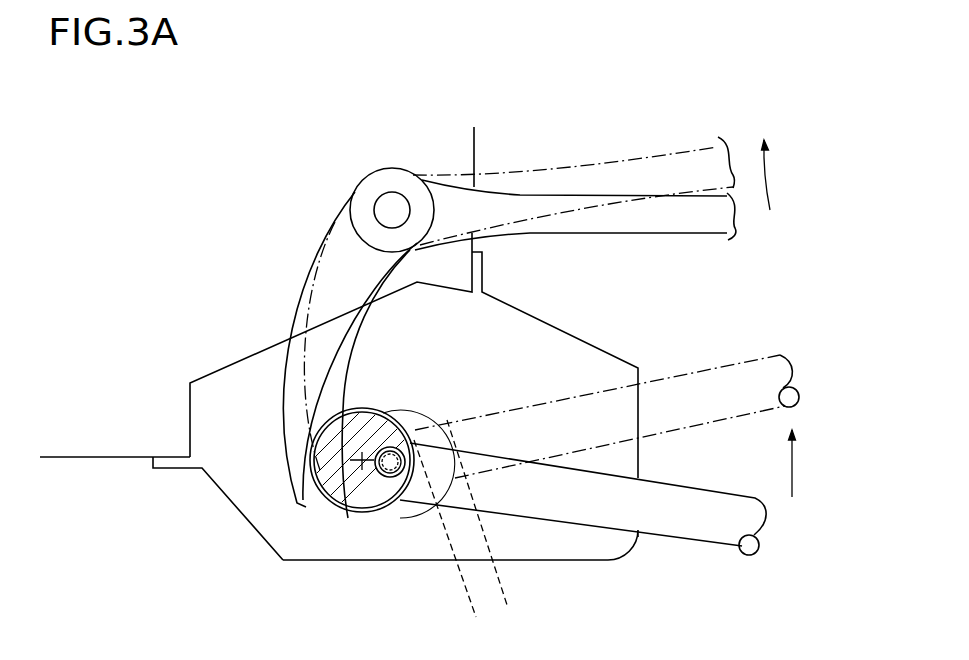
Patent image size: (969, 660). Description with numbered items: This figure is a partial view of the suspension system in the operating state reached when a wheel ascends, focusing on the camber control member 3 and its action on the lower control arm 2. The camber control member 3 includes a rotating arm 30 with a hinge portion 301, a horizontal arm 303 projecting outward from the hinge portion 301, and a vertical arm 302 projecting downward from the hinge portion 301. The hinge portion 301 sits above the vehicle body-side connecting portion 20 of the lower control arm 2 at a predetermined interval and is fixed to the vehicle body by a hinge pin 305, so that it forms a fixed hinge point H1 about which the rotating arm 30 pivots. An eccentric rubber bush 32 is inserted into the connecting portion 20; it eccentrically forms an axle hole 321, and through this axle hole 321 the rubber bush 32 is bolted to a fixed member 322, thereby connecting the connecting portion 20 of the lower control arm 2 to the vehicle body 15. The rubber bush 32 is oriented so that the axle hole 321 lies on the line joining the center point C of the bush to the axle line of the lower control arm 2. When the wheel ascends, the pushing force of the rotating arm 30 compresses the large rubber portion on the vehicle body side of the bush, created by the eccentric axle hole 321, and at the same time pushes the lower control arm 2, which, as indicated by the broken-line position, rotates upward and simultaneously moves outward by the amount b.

The lower control arm 2 is at (690, 530).
The camber control member 3 is at (280, 208).
The vehicle body 15 is at (117, 457).
The vehicle body-side connecting portion 20 is at (317, 522).
The rotating arm 30 is at (570, 155).
The eccentric rubber bush 32 is at (303, 493).
The hinge portion 301 is at (367, 192).
The vertical arm 302 is at (297, 312).
The horizontal arm 303 is at (683, 225).
The hinge pin 305 is at (392, 205).
The axle hole 321 is at (392, 477).
The fixed member 322 is at (238, 488).
The fixed hinge point H1 is at (413, 163).
The center point C is at (348, 518).
The outward movement amount b is at (433, 611).